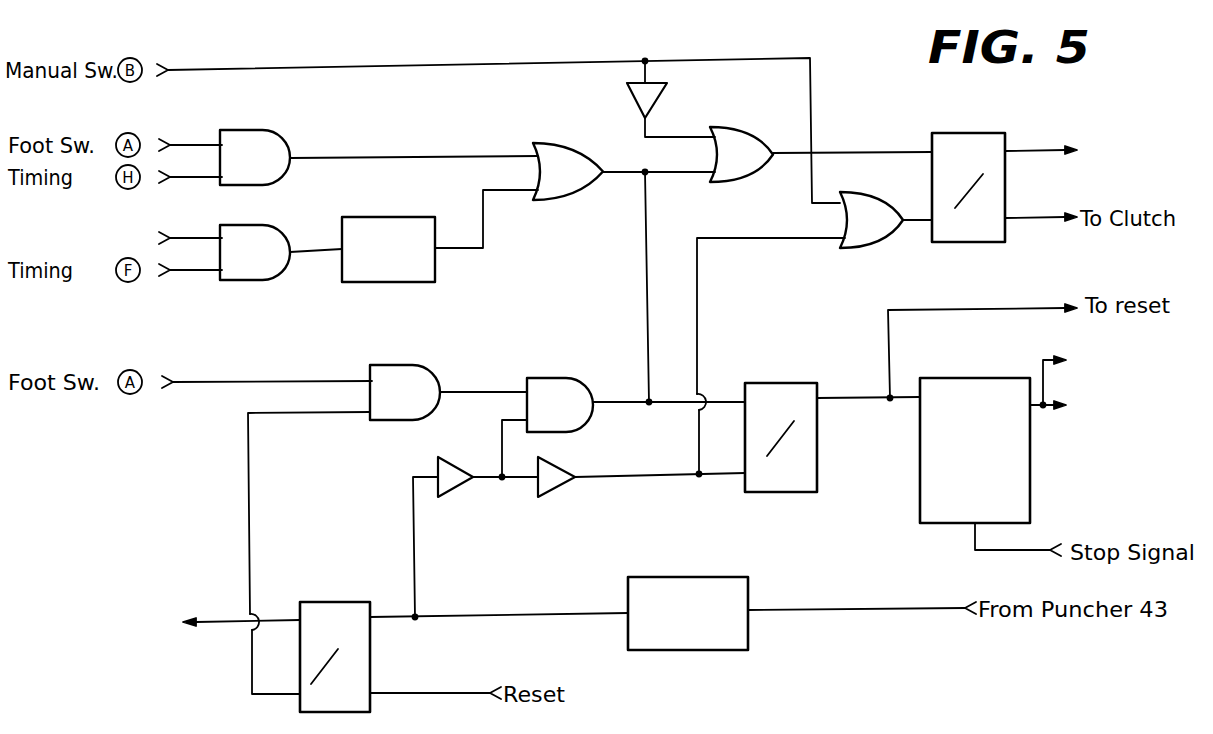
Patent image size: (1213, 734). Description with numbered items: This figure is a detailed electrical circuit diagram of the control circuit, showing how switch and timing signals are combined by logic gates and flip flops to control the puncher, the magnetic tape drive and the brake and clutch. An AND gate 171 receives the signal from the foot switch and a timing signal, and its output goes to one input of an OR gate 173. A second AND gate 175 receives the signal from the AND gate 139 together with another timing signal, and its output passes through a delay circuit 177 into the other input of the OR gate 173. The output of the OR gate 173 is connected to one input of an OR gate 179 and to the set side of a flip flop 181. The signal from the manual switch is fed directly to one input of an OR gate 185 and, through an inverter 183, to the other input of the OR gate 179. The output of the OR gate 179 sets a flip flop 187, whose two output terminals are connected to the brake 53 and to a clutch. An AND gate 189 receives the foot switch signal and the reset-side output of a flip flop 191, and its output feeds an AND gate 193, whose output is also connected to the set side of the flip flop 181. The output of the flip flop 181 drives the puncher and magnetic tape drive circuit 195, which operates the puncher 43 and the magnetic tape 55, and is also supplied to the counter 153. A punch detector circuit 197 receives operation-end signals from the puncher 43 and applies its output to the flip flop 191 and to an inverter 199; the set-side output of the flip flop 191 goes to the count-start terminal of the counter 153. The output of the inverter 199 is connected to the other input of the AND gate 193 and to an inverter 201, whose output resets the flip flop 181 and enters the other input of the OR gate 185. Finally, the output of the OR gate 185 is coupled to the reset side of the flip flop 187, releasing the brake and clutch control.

The AND gate 171 is at (260, 130).
The OR gate 173 is at (584, 191).
The AND gate 175 is at (268, 217).
The delay circuit 177 is at (412, 283).
The OR gate 179 is at (736, 127).
The flip flop 181 is at (781, 383).
The inverter 183 is at (628, 87).
The OR gate 185 is at (884, 241).
The flip flop 187 is at (970, 133).
The AND gate 189 is at (407, 366).
The flip flop 191 is at (334, 602).
The AND gate 193 is at (555, 378).
The puncher and magnetic tape drive circuit 195 is at (1030, 470).
The punch detector circuit 197 is at (670, 651).
The inverter 199 is at (455, 490).
The inverter 201 is at (562, 490).
The brake 53 is at (1087, 162).
The magnetic tape 55 is at (1126, 373).
The puncher 43 is at (1121, 417).
The AND gate 139 is at (55, 239).
The counter 153 is at (601, 492).